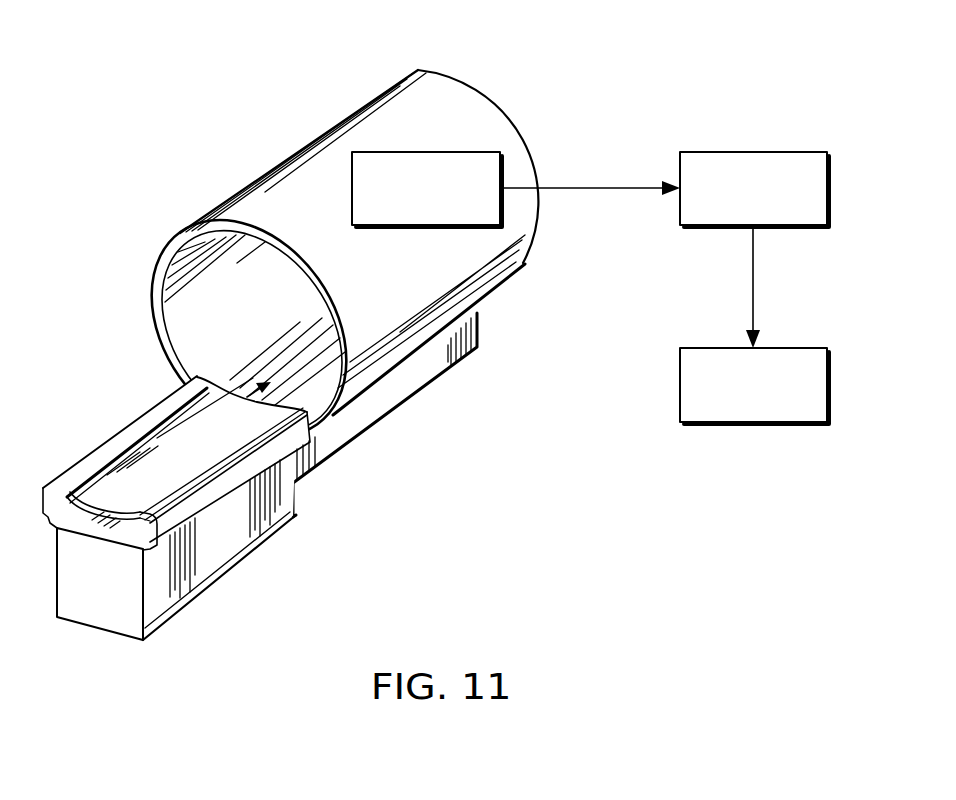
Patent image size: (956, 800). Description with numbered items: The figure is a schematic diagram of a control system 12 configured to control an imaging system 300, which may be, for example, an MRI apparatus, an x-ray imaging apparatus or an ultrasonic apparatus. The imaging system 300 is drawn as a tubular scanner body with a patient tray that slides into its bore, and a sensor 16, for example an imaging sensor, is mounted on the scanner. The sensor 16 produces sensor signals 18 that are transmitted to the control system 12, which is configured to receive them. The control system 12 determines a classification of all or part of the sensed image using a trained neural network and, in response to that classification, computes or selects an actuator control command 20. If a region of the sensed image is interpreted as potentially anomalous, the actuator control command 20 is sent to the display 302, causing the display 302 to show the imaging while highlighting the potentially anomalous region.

The imaging system 300 is at (184, 63).
The sensor 16 is at (423, 151).
The sensor signals 18 is at (590, 187).
The control system 12 is at (753, 151).
The actuator control command 20 is at (752, 286).
The display 302 is at (679, 386).